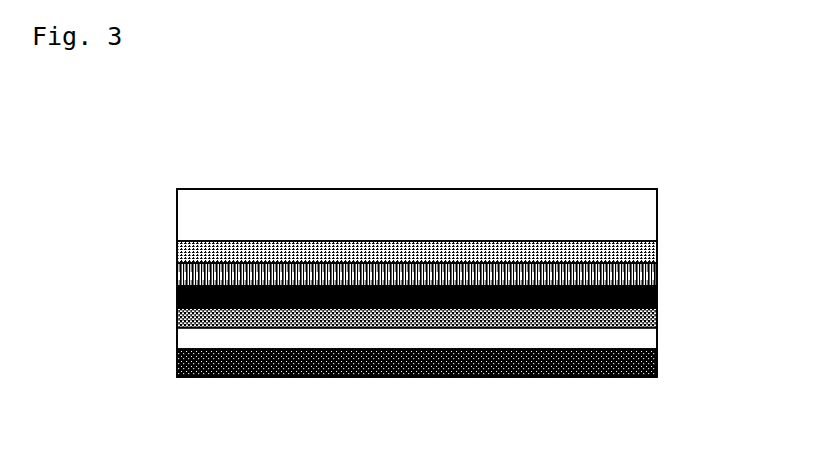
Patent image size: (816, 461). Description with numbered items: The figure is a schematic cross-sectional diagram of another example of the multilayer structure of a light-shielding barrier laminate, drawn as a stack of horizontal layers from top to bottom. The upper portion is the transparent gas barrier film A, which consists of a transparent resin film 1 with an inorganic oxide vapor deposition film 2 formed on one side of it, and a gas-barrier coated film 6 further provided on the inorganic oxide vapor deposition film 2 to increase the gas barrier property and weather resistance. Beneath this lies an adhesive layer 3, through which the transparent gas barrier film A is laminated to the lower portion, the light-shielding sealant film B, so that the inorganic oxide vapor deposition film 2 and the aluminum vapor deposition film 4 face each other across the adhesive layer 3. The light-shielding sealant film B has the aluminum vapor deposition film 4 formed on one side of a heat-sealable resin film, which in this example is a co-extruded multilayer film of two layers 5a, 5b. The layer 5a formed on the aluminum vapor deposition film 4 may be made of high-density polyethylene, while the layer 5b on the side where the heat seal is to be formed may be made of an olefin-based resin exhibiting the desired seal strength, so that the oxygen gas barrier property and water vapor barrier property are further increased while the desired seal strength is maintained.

The transparent resin film 1 is at (657, 217).
The inorganic oxide vapor deposition film 2 is at (657, 250).
The gas-barrier coated film 6 is at (450, 271).
The adhesive layer 3 is at (657, 298).
The aluminum vapor deposition film 4 is at (657, 319).
The layer formed on the aluminum vapor deposition film 5a is at (657, 338).
The layer on the heat seal side 5b is at (456, 392).
The transparent gas barrier film A is at (482, 206).
The light-shielding sealant film B is at (482, 374).